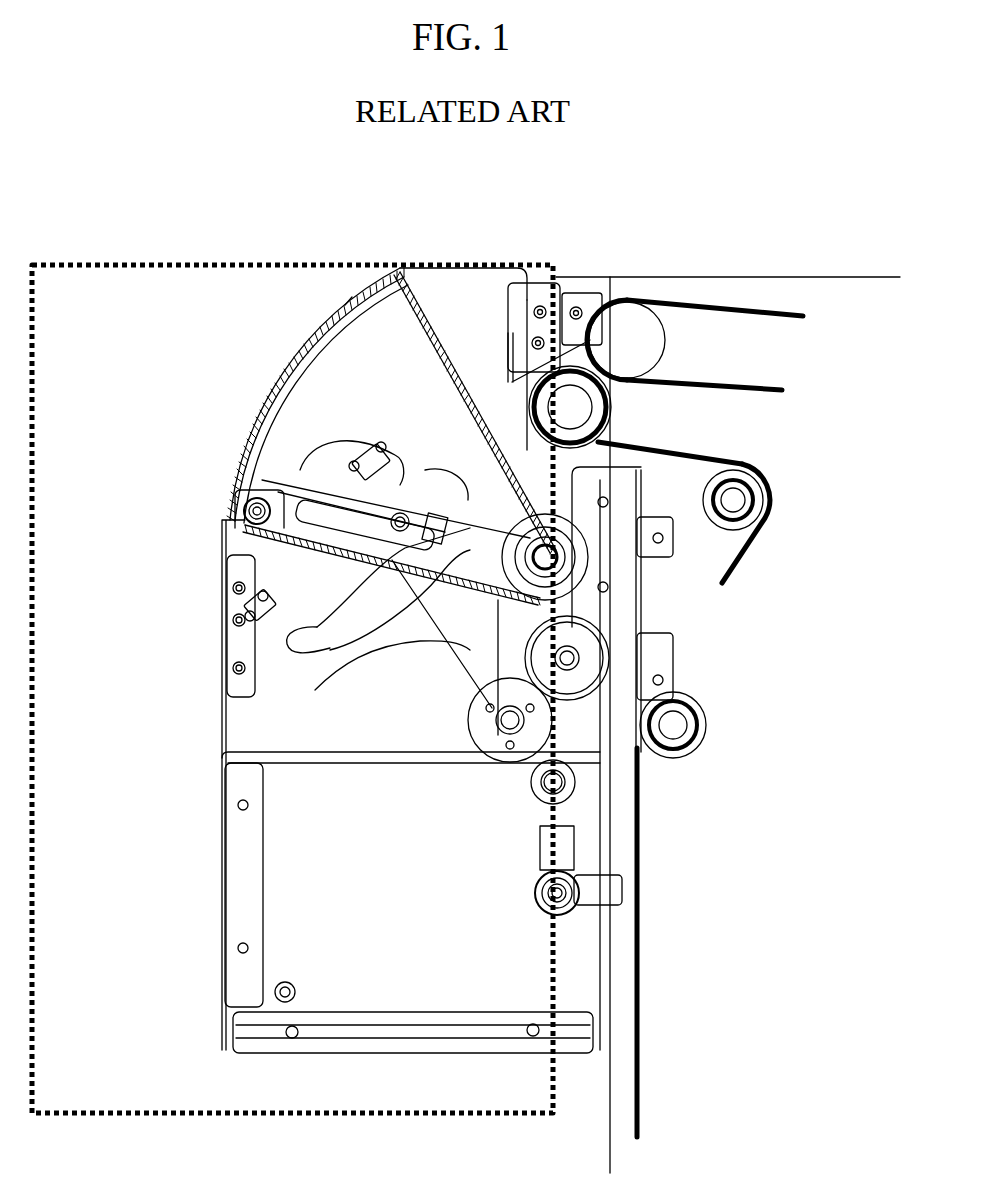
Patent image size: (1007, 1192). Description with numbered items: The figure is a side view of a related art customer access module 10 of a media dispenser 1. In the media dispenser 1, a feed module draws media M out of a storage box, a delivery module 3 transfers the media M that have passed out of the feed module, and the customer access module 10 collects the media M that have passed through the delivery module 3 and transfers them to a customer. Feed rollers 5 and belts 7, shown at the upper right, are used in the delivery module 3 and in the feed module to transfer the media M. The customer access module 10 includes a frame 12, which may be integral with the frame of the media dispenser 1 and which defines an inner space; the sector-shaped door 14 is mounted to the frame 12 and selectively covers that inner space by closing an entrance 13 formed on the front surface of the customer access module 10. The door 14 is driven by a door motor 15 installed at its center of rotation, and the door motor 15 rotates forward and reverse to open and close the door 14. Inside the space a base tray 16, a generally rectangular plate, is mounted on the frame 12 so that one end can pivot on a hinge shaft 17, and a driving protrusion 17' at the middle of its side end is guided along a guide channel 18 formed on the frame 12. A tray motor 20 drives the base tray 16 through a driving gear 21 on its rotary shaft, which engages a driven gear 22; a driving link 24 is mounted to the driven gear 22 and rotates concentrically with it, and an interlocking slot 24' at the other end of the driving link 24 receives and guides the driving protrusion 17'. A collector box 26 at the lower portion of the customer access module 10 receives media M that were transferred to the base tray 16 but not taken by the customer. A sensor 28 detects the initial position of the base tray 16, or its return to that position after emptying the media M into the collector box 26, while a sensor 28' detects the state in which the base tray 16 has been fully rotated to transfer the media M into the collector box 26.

The media dispenser 1 is at (609, 264).
The delivery module 3 is at (735, 290).
The feed rollers 5 is at (610, 420).
The belts 7 is at (792, 318).
The customer access module 10 is at (345, 263).
The frame 12 is at (485, 285).
The entrance 13 is at (345, 308).
The door 14 is at (340, 320).
The door motor 15 is at (600, 585).
The base tray 16 is at (300, 485).
The hinge shaft 17 is at (213, 524).
The driving protrusion 17' is at (712, 522).
The guide channel 18 is at (325, 623).
The tray motor 20 is at (583, 655).
The driving gear 21 is at (593, 697).
The driven gear 22 is at (565, 780).
The driving link 24 is at (362, 701).
The interlocking slot 24' is at (556, 501).
The collector box 26 is at (300, 925).
The sensor 28 is at (298, 427).
The sensor 28' is at (214, 601).
The media M is at (310, 470).